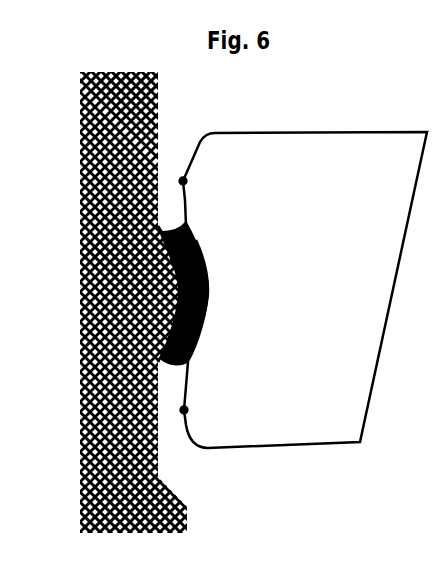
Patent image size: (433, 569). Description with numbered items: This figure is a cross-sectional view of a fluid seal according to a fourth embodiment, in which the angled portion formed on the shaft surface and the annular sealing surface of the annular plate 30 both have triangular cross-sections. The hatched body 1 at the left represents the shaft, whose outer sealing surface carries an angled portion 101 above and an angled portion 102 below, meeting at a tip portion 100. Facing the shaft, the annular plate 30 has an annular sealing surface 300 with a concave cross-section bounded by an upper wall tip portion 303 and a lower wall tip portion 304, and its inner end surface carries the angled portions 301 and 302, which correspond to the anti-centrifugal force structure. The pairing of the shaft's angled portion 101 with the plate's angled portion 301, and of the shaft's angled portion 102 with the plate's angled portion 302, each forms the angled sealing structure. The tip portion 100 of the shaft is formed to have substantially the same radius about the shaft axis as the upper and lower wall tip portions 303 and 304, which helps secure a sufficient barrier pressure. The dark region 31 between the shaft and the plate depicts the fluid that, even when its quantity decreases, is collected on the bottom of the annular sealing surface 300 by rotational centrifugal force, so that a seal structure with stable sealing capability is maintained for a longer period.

The substrate 1 is at (85, 130).
The annular plate 30 is at (348, 167).
The adhesive 31 is at (178, 318).
The tip portion 100 is at (182, 292).
The angled portion 101 is at (172, 258).
The angled portion 102 is at (172, 346).
The annular sealing surface 300 is at (206, 290).
The angled portion 301 is at (193, 258).
The angled portion 302 is at (193, 318).
The upper wall tip portion 303 is at (184, 178).
The lower wall tip portion 304 is at (184, 410).